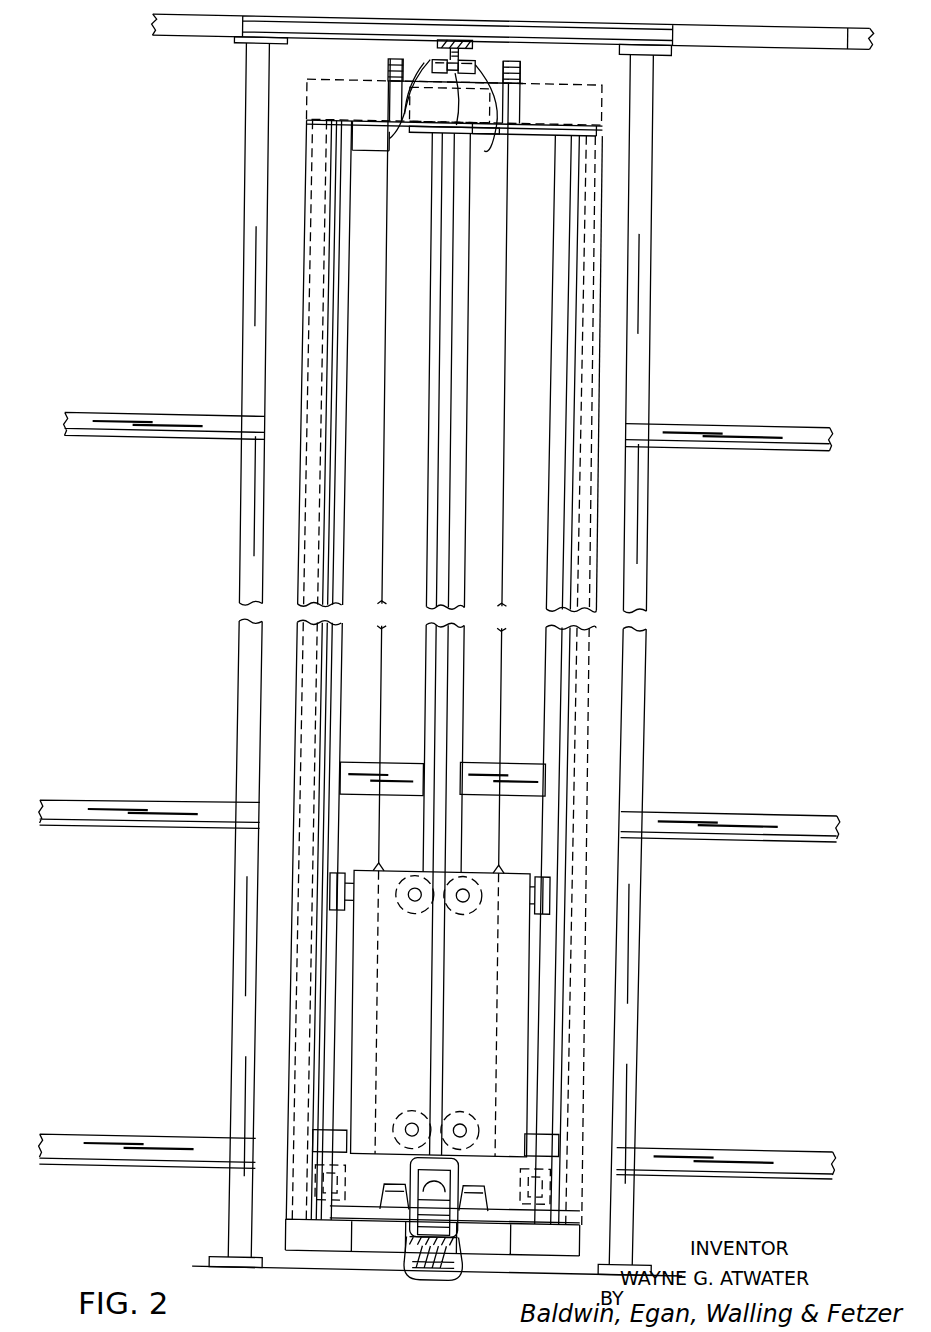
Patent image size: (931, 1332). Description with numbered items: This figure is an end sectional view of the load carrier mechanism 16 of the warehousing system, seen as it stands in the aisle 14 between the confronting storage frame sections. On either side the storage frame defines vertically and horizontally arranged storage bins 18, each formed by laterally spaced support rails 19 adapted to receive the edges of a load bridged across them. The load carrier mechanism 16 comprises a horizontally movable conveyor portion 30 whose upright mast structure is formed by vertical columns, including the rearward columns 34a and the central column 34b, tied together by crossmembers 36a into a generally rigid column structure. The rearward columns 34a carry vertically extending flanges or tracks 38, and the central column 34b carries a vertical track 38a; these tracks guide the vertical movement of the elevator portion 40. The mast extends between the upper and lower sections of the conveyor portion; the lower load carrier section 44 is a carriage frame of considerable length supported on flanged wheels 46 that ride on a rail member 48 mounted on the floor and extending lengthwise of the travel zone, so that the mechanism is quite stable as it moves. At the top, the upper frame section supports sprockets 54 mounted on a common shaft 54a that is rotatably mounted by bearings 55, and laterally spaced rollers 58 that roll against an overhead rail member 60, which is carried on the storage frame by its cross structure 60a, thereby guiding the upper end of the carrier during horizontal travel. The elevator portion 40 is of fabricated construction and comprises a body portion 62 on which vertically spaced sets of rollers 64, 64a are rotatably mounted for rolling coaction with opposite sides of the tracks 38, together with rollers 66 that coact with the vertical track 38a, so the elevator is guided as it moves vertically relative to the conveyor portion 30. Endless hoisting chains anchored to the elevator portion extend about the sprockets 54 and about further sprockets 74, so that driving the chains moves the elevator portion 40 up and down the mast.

The aisle 14 is at (283, 66).
The load carrier mechanism 16 is at (596, 327).
The storage bins 18 is at (170, 170).
The support rails 19 is at (152, 420).
The conveyor portion 30 is at (594, 162).
The rearward columns 34a is at (595, 202).
The central column 34b is at (451, 349).
The crossmembers 36a is at (326, 1145).
The tracks 38 is at (340, 562).
The vertical track 38a is at (452, 419).
The elevator portion 40 is at (557, 98).
The lower load carrier section 44 is at (312, 1243).
The flanged wheels 46 is at (432, 1268).
The rail member 48 is at (472, 1270).
The sprockets 54 is at (380, 68).
The common shaft 54a is at (513, 70).
The bearings 55 is at (388, 122).
The rollers 58 is at (444, 53).
The rail member 60 is at (428, 115).
The cross structure 60a is at (676, 42).
The body portion 62 is at (514, 993).
The rollers 64 is at (333, 905).
The rollers 64a is at (647, 1218).
The rollers 66 is at (464, 1111).
The sprockets 74 is at (520, 1222).